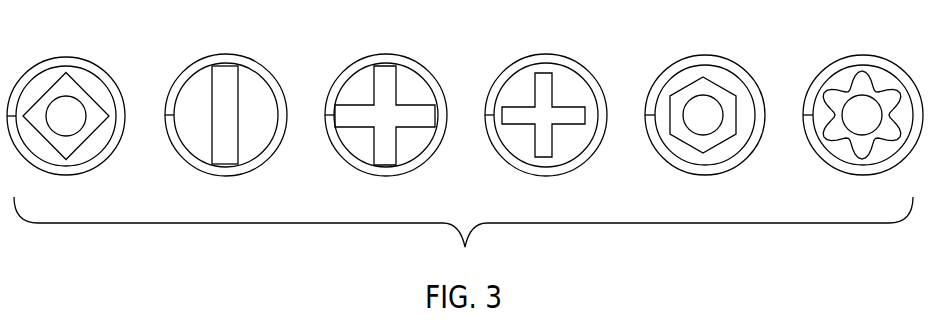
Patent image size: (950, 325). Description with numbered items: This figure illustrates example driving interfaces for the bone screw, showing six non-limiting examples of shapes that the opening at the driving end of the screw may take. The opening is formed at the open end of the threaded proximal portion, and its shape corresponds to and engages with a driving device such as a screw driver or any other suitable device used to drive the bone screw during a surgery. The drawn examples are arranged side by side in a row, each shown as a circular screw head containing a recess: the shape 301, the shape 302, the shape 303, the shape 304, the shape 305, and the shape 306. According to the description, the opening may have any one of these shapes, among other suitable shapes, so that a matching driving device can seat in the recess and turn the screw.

The shape 301 is at (94, 60).
The shape 302 is at (254, 60).
The shape 303 is at (414, 60).
The shape 304 is at (574, 60).
The shape 305 is at (732, 60).
The shape 306 is at (892, 60).